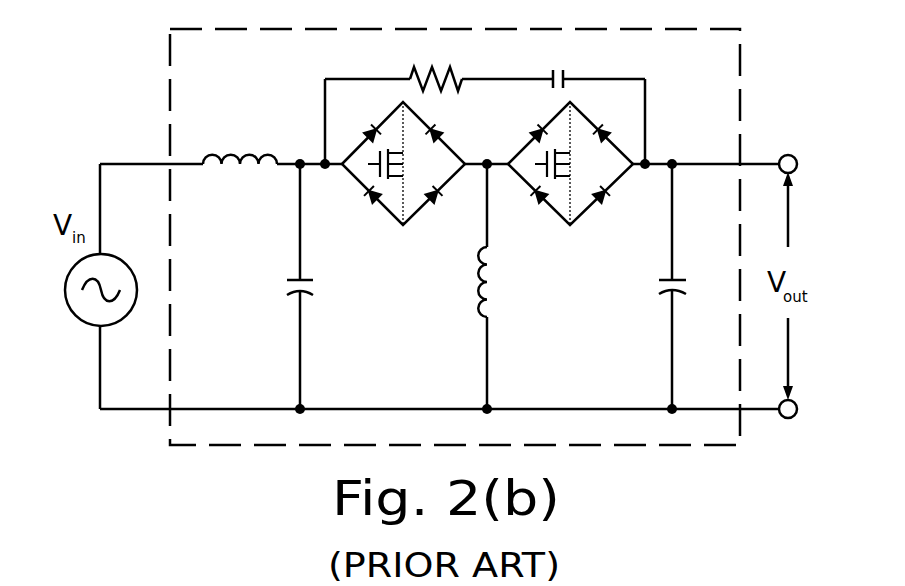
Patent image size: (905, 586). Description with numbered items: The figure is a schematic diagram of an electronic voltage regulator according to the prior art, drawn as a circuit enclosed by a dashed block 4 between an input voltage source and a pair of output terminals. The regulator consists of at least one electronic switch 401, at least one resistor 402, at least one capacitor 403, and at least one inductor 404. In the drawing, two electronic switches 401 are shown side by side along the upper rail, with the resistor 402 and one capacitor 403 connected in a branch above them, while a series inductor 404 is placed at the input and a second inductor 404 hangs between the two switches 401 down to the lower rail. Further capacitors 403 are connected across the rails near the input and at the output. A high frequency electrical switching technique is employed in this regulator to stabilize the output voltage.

The filter circuit block 4 is at (715, 105).
The electronic switch 401 is at (530, 147).
The resistor 402 is at (436, 62).
The capacitor 403 is at (513, 169).
The inductor 404 is at (373, 221).